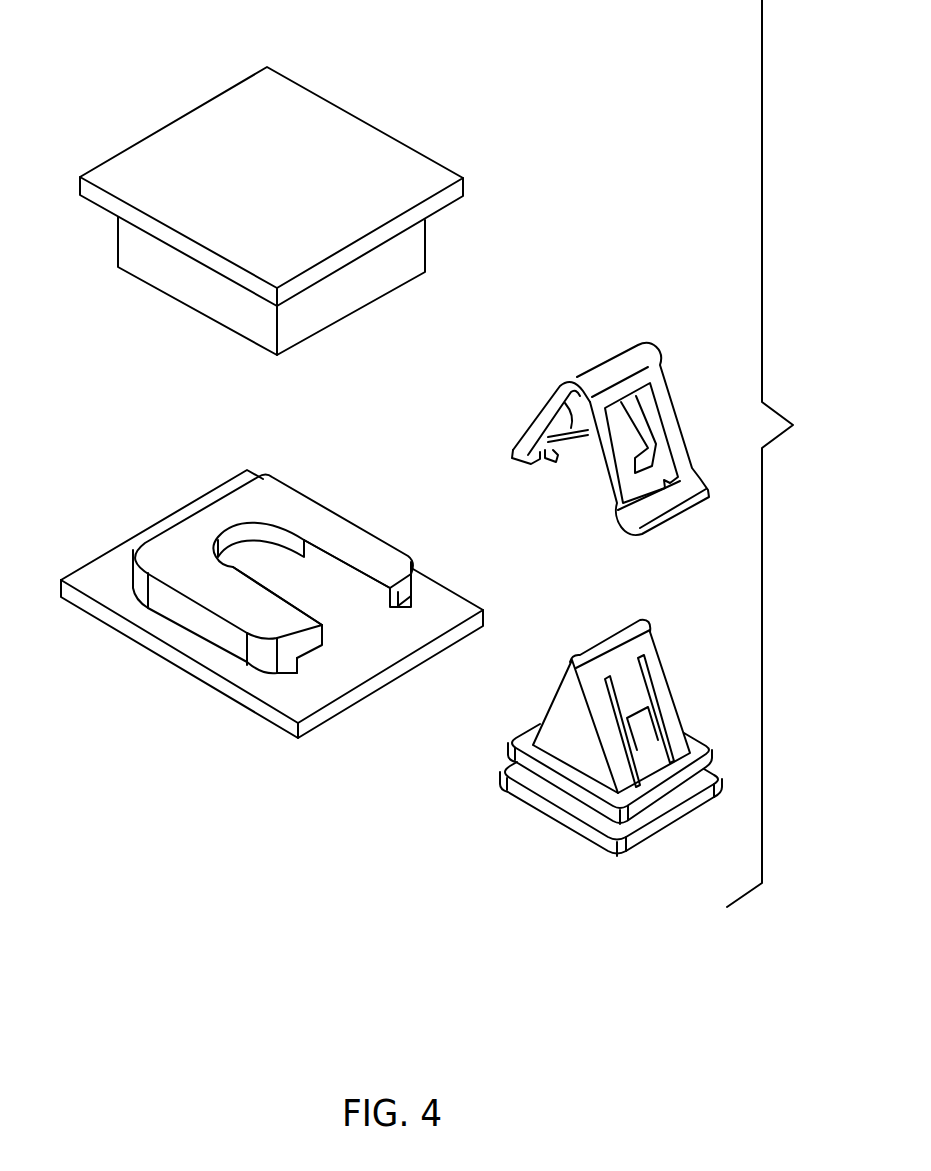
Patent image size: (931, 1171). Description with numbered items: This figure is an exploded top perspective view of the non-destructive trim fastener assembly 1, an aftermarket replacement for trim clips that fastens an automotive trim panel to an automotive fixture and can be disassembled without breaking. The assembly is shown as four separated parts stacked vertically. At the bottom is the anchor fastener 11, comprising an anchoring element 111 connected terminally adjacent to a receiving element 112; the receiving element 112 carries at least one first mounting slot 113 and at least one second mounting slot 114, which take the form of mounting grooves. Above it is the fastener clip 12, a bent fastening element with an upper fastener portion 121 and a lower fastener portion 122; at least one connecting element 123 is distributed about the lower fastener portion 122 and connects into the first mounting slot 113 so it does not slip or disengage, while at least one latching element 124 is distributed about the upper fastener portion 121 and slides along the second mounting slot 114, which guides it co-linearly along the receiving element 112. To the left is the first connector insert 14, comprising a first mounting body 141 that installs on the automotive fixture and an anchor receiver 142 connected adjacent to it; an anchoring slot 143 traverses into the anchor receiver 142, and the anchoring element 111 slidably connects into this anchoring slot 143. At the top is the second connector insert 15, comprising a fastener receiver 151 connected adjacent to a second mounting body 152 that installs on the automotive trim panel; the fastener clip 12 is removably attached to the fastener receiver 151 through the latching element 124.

The non-destructive trim fastener assembly 1 is at (773, 453).
The anchor fastener 11 is at (596, 769).
The anchoring element 111 is at (633, 857).
The receiving element 112 is at (546, 697).
The first mounting slot 113 is at (648, 672).
The second mounting slot 114 is at (643, 742).
The fastener clip 12 is at (585, 417).
The upper fastener portion 121 is at (630, 343).
The lower fastener portion 122 is at (669, 527).
The connecting element 123 is at (553, 463).
The latching element 124 is at (547, 402).
The first connector insert 14 is at (266, 582).
The first mounting body 141 is at (179, 670).
The anchor receiver 142 is at (325, 500).
The anchoring slot 143 is at (361, 628).
The second connector insert 15 is at (341, 204).
The fastener receiver 151 is at (429, 253).
The second mounting body 152 is at (466, 180).